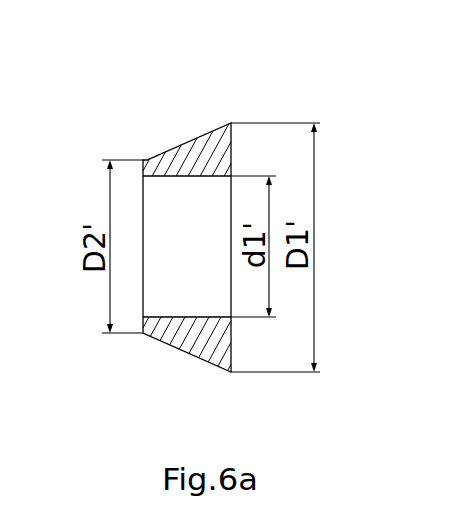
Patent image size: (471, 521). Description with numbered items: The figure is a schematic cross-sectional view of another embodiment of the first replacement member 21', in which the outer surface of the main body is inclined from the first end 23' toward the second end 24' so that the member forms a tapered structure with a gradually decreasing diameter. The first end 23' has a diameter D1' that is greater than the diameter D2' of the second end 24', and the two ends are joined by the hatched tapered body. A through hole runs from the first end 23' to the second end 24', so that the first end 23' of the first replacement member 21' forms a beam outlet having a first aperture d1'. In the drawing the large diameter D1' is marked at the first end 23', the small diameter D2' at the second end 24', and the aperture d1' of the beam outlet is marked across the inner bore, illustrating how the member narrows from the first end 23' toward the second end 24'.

The first replacement member 21' is at (149, 203).
The first end 23' is at (193, 278).
The second end 24' is at (186, 302).